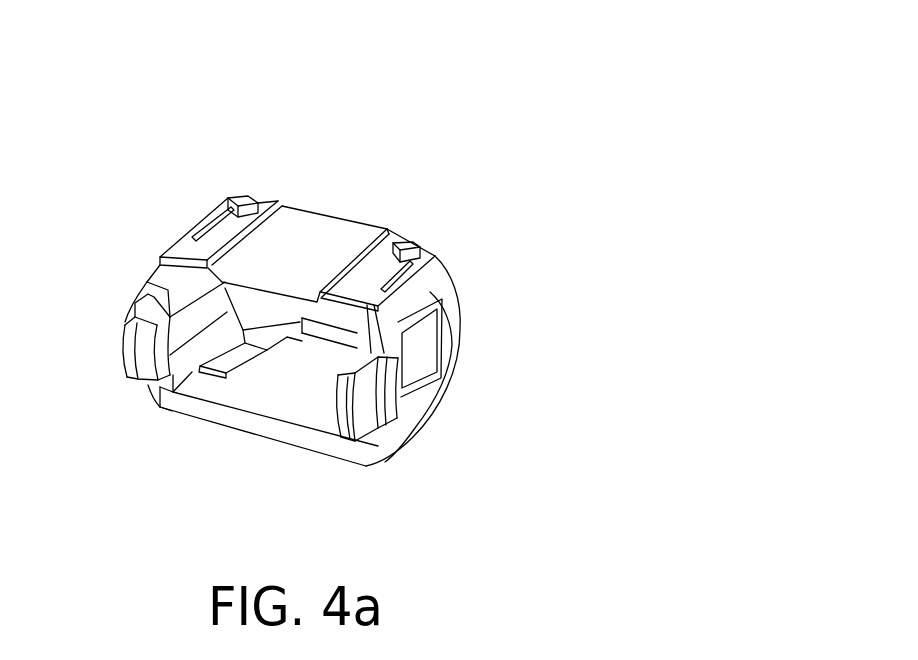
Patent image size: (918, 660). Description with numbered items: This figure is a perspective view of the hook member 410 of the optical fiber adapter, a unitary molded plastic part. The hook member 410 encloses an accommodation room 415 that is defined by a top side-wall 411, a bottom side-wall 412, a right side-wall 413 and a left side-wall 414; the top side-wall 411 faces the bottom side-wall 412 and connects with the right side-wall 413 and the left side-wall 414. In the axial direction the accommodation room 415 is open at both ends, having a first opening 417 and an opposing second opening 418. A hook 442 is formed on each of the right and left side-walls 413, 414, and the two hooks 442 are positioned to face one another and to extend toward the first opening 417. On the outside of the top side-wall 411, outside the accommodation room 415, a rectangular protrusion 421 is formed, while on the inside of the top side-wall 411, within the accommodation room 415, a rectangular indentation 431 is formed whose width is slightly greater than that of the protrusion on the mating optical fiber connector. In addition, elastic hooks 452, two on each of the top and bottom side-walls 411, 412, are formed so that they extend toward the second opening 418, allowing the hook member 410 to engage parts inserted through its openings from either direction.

The hook member 410 is at (511, 158).
The top side-wall 411 is at (361, 296).
The bottom side-wall 412 is at (245, 420).
The right side-wall 413 is at (455, 343).
The left side-wall 414 is at (227, 313).
The accommodation room 415 is at (302, 407).
The first opening 417 is at (243, 387).
The second opening 418 is at (302, 332).
The rectangular protrusion 421 is at (331, 232).
The rectangular indentation 431 is at (259, 296).
The hook 442 is at (128, 342).
The elastic hook 452 is at (237, 200).